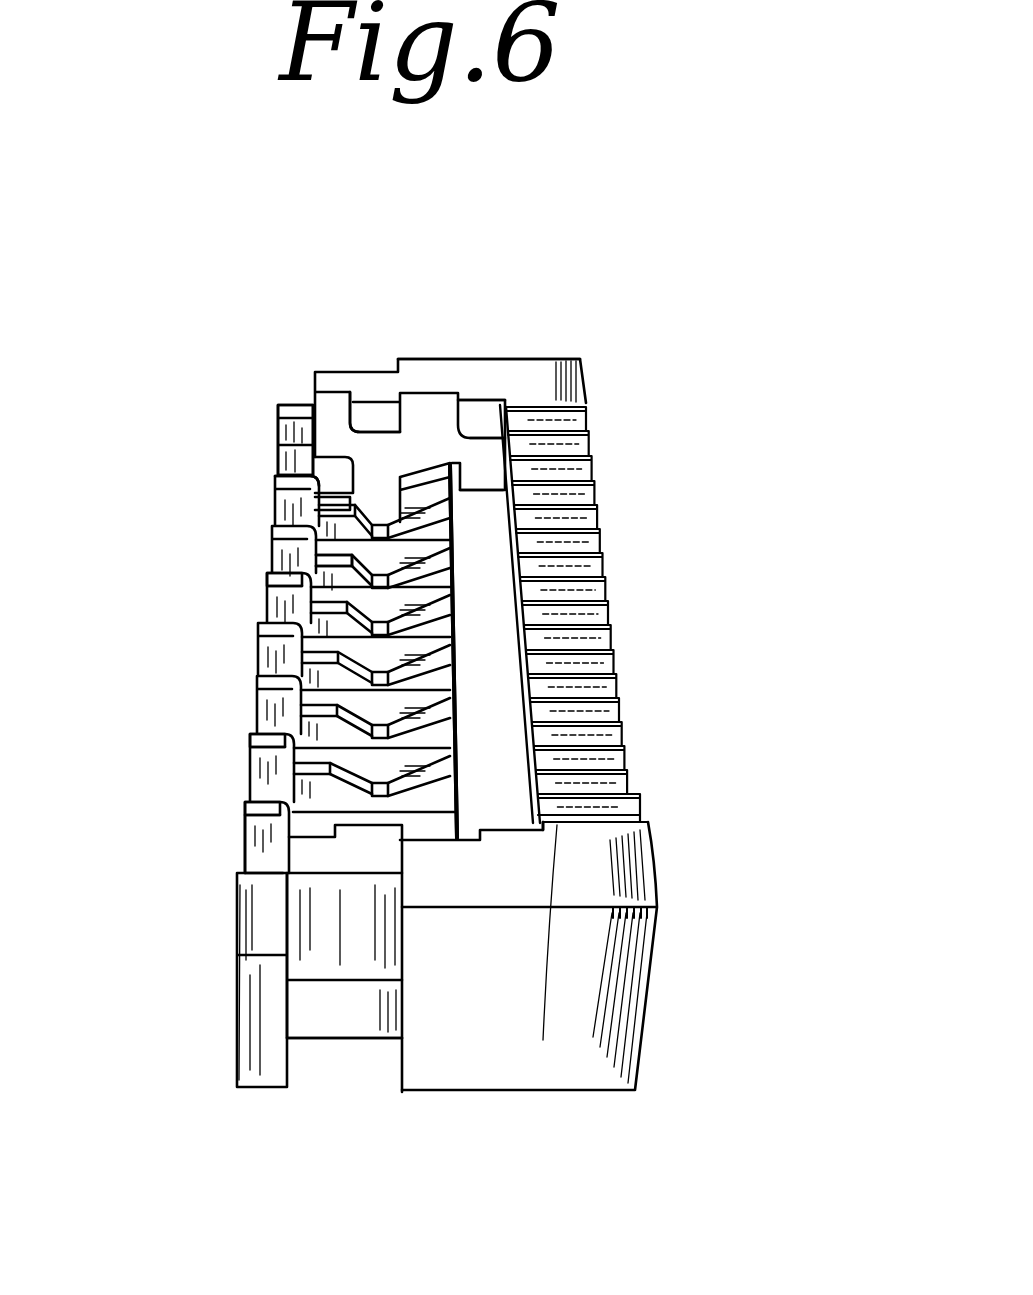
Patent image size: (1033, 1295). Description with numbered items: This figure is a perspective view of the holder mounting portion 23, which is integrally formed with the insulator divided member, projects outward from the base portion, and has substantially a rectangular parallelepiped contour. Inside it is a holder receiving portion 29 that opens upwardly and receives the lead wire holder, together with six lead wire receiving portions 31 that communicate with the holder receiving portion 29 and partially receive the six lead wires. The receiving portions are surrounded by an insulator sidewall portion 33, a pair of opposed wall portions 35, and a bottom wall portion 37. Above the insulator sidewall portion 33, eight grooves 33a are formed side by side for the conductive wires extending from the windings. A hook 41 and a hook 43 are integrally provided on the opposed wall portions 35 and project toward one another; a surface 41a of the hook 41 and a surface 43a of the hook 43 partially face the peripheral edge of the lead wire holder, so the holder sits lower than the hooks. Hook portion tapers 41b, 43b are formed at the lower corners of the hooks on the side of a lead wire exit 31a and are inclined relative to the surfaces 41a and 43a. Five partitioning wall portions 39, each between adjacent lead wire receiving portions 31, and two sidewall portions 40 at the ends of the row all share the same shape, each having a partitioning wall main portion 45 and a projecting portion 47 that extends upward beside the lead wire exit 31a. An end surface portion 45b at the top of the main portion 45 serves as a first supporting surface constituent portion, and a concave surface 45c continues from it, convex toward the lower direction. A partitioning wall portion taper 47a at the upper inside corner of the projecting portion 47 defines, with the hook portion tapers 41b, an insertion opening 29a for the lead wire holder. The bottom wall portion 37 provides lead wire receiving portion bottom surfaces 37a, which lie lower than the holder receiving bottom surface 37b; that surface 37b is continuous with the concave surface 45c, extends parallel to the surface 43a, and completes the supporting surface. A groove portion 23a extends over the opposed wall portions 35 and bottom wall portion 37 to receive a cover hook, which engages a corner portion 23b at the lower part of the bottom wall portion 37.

The holder mounting portion 23 is at (329, 341).
The groove portion 23a is at (370, 960).
The corner portion 23b is at (360, 1040).
The holder receiving portion 29 is at (440, 413).
The insertion opening 29a is at (312, 468).
The lead wire receiving portion 31 is at (507, 440).
The lead wire exit 31a is at (276, 446).
The insulator sidewall portion 33 is at (560, 533).
The grooves 33a is at (560, 428).
The opposed wall portions 35 is at (430, 372).
The bottom wall portion 37 is at (317, 1007).
The lead wire receiving portion bottom surfaces 37a is at (233, 814).
The holder receiving bottom surface 37b is at (545, 640).
The partitioning wall portions 39 is at (268, 556).
The sidewall portions 40 is at (248, 506).
The hook 41 is at (372, 388).
The surface of the hook 41a is at (331, 471).
The hook portion taper 41b is at (345, 445).
The hook 43 is at (493, 400).
The surface of the hook 43a is at (553, 445).
The hook portion taper 43b is at (455, 425).
The partitioning wall main portion 45 is at (360, 545).
The end surface portion 45b is at (340, 558).
The concave surface 45c is at (545, 760).
The projecting portion 47 is at (249, 530).
The partitioning wall portion taper 47a is at (325, 572).